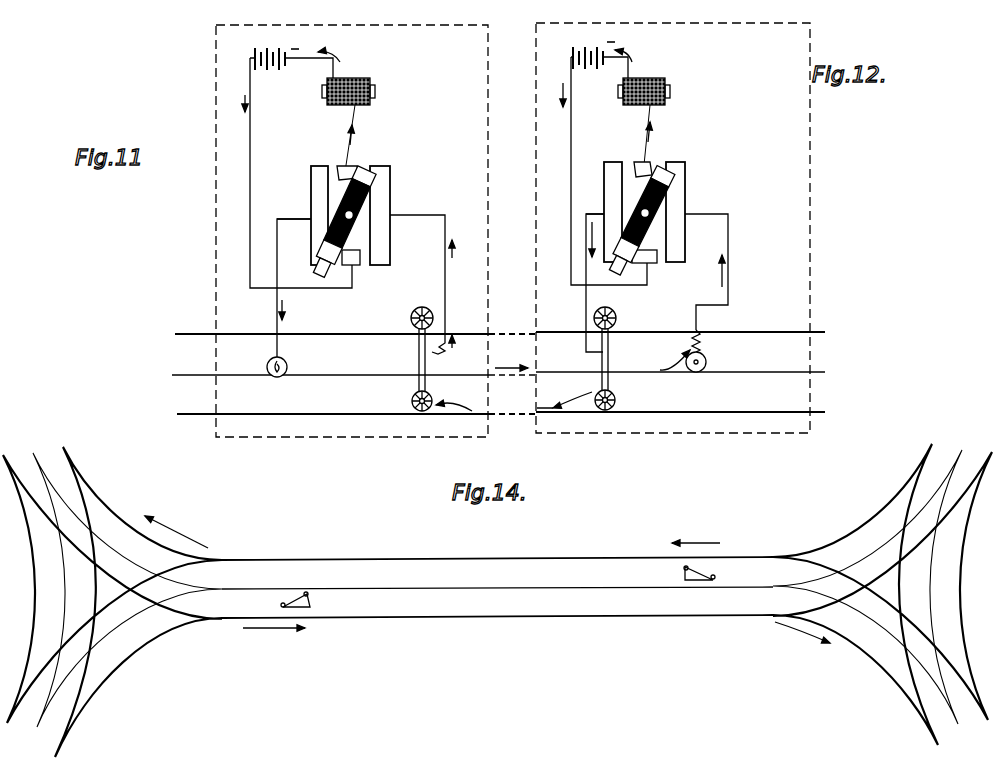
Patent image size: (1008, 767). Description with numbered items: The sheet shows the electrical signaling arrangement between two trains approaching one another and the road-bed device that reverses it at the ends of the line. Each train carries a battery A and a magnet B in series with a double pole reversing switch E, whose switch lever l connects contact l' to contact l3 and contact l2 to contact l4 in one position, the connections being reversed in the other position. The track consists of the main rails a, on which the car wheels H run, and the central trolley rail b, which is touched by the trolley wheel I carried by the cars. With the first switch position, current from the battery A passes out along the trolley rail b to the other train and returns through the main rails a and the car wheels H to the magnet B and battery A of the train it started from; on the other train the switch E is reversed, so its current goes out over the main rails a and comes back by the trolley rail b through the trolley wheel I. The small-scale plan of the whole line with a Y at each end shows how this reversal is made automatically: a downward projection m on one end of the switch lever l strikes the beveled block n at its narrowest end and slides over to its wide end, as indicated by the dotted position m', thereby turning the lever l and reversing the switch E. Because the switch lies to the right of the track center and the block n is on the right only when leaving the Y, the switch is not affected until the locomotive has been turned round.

In FIG. 11, the main track rails a is at (320, 373).
In FIG. 14, the main track rails a is at (497, 600).
In FIG. 11, the trolley rail b is at (324, 373).
In FIG. 14, the trolley rail b is at (497, 588).
In FIG. 11, the battery A is at (254, 49).
In FIG. 12, the battery A is at (590, 51).
In FIG. 11, the magnet B is at (352, 80).
In FIG. 12, the magnet B is at (648, 80).
In FIG. 11, the double pole reversing switch E is at (361, 259).
In FIG. 12, the double pole reversing switch E is at (657, 255).
In FIG. 11, the car wheels H is at (432, 402).
In FIG. 12, the car wheels H is at (593, 318).
In FIG. 11, the trolley wheel I is at (288, 365).
In FIG. 12, the trolley wheel I is at (704, 358).
In FIG. 11, the switch lever l is at (350, 207).
In FIG. 12, the switch lever l is at (648, 206).
In FIG. 11, the switch contact l' is at (344, 161).
In FIG. 12, the switch contact l' is at (641, 157).
In FIG. 11, the switch contact l2 is at (318, 166).
In FIG. 12, the switch contact l2 is at (686, 236).
In FIG. 11, the switch contact l3 is at (391, 166).
In FIG. 12, the switch contact l3 is at (606, 162).
In FIG. 11, the switch contact l4 is at (359, 266).
In FIG. 12, the switch contact l4 is at (648, 265).
In FIG. 11, the downward projection m is at (329, 274).
In FIG. 12, the downward projection m is at (624, 273).
In FIG. 14, the downward projection m is at (494, 592).
In FIG. 14, the dotted position of projection m' is at (505, 575).
In FIG. 14, the beveled block n is at (312, 606).